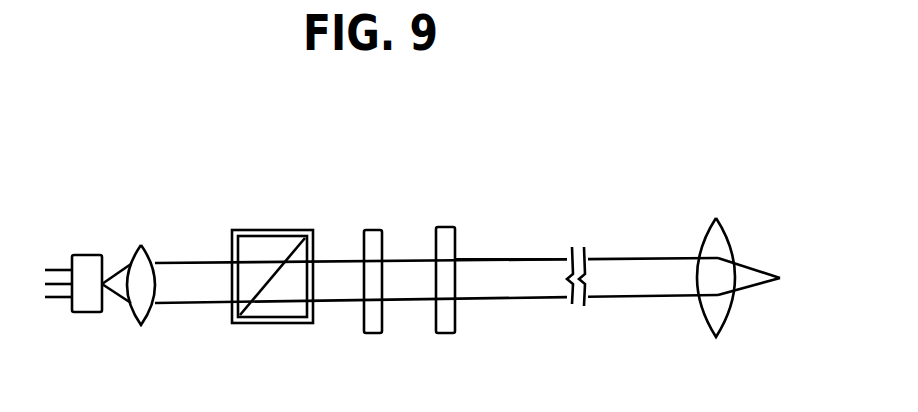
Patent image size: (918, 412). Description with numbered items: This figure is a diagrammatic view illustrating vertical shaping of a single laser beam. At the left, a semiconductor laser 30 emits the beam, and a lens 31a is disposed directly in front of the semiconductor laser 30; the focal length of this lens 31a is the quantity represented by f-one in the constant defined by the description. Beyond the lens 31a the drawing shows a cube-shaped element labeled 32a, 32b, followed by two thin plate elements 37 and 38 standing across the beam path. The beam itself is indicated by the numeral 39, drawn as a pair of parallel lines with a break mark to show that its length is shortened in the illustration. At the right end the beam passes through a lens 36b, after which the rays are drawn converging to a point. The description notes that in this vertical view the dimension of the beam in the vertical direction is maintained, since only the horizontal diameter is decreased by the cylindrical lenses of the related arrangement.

The semiconductor laser 30 is at (88, 312).
The lens 31a is at (139, 244).
The polarizing beam splitter 32a is at (294, 245).
The polarizing beam splitter 32b is at (258, 228).
The quarter-wave plate 37 is at (375, 228).
The plate 38 is at (447, 226).
The light beam 39 is at (531, 259).
The objective lens 36b is at (700, 320).